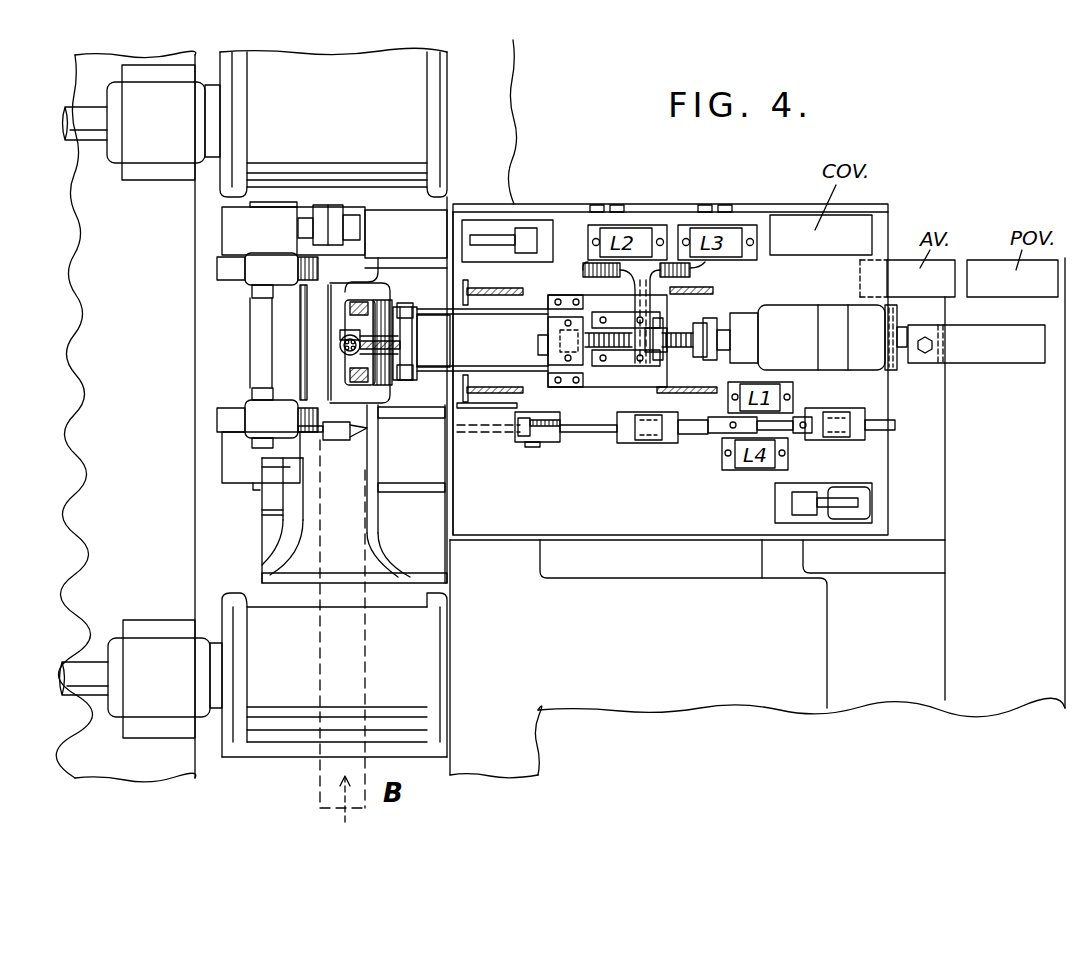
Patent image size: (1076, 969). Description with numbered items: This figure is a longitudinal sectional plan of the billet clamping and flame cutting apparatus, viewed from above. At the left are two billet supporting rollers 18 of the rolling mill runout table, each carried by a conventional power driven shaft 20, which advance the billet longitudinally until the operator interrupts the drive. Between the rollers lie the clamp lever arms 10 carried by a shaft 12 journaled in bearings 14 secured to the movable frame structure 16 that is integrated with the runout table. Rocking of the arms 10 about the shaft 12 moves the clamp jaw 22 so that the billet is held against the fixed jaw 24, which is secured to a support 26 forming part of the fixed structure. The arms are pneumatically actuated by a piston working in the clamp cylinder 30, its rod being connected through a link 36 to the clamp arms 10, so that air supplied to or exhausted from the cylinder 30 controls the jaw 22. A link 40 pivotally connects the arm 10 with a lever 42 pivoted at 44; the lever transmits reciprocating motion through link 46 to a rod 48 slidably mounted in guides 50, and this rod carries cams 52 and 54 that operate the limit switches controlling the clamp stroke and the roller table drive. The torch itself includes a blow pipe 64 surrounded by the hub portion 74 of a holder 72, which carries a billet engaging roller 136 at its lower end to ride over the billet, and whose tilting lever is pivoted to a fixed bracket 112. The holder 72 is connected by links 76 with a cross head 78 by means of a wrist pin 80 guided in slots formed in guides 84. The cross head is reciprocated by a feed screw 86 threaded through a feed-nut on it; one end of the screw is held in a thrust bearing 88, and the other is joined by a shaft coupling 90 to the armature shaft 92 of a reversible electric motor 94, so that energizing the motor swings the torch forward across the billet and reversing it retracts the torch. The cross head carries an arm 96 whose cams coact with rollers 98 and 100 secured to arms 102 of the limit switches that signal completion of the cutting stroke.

The clamp lever arms 10 is at (228, 268).
The shaft 12 is at (258, 353).
The bearings 14 is at (230, 230).
The movable frame structure 16 is at (586, 668).
The billet supporting rollers 18 is at (348, 122).
The power driven shafts 20 is at (78, 118).
The clamp jaw 22 is at (245, 287).
The fixed jaw 24 is at (376, 480).
The support 26 is at (425, 522).
The cylinder 30 is at (704, 206).
The link 36 is at (338, 250).
The link 40 is at (425, 430).
The lever 42 is at (525, 434).
The pivot 44 is at (531, 447).
The link 46 is at (602, 433).
The rod 48 is at (700, 437).
The guides 50 is at (645, 446).
The cam 52 is at (722, 434).
The cam 54 is at (806, 418).
The blow pipe 64 is at (343, 350).
The holder 72 is at (380, 326).
The hub portion 74 is at (345, 342).
The links 76 is at (470, 315).
The cross head 78 is at (660, 327).
The wrist pin 80 is at (650, 370).
The guides 84 is at (614, 356).
The feed screw 86 is at (692, 332).
The thrust bearing 88 is at (556, 340).
The shaft coupling 90 is at (748, 322).
The armature shaft 92 is at (722, 360).
The reversible electric motor 94 is at (838, 310).
The arm 96 is at (635, 290).
The roller 98 is at (583, 270).
The roller 100 is at (690, 272).
The arms 102 is at (582, 262).
The fixed bracket 112 is at (494, 290).
The billet engaging roller 136 is at (348, 297).